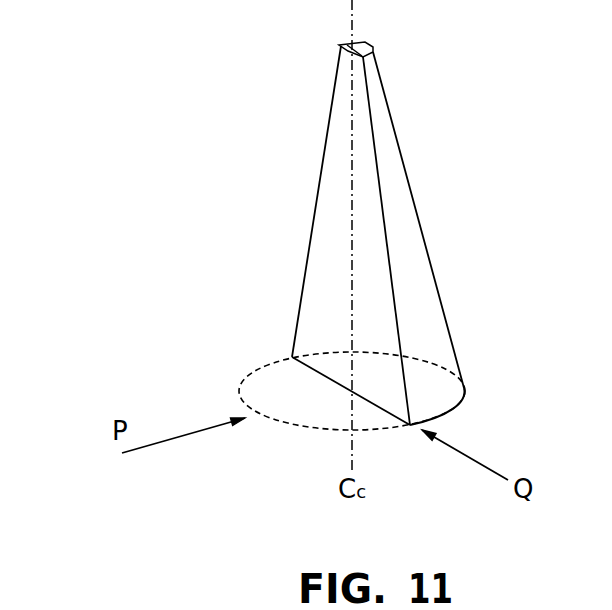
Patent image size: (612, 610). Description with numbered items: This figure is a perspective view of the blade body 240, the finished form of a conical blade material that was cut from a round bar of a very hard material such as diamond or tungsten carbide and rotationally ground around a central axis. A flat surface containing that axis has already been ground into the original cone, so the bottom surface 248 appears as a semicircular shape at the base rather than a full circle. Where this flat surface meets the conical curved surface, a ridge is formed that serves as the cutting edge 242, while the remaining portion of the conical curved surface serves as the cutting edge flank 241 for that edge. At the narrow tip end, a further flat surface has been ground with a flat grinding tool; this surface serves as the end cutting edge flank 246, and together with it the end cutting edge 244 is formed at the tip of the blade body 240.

The blade body 240 is at (80, 29).
The cutting edge flank 241 is at (407, 249).
The cutting edge 242 is at (316, 191).
The end cutting edge 244 is at (339, 46).
The end cutting edge flank 246 is at (372, 45).
The bottom surface 248 is at (440, 421).